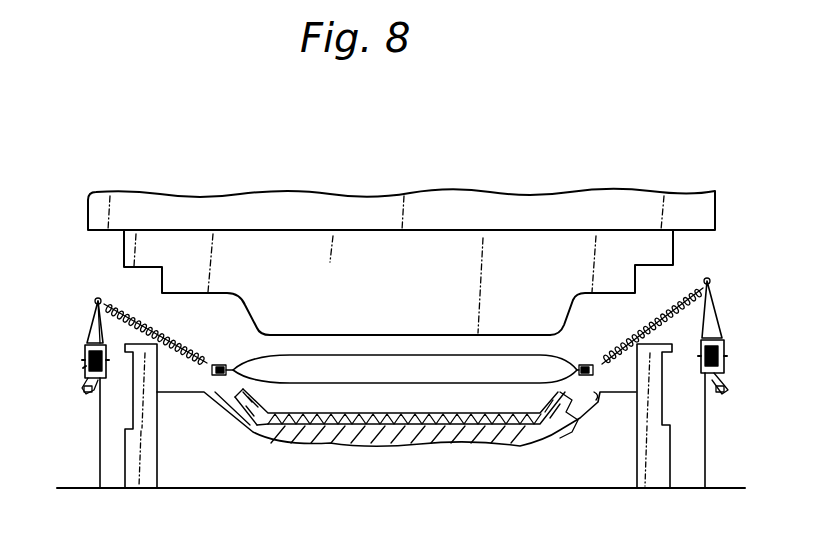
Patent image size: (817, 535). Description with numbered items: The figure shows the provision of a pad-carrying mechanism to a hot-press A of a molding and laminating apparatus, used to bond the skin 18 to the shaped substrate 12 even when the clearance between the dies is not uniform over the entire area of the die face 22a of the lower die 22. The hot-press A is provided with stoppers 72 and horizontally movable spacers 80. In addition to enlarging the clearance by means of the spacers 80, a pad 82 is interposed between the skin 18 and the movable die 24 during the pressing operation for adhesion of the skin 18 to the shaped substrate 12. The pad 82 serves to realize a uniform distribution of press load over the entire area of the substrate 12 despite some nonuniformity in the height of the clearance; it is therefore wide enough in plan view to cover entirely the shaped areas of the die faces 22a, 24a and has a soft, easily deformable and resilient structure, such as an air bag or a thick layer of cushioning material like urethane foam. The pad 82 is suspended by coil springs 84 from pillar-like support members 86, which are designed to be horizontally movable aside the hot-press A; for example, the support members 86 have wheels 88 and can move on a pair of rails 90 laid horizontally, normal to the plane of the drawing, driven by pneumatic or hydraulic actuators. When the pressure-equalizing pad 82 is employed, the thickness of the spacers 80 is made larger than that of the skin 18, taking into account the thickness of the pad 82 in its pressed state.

The hot-press A is at (570, 186).
The shaped substrate 12 is at (367, 440).
The skin 18 is at (302, 414).
The stationary die 22 is at (281, 470).
The die face 22a is at (590, 395).
The movable die 24 is at (337, 288).
The die face 24a is at (490, 338).
The stopper 72 is at (148, 408).
The spacer 80 is at (158, 348).
The pad 82 is at (256, 358).
The coil spring 84 is at (155, 337).
The support member 86 is at (93, 326).
The wheel 88 is at (86, 362).
The rail 90 is at (104, 384).